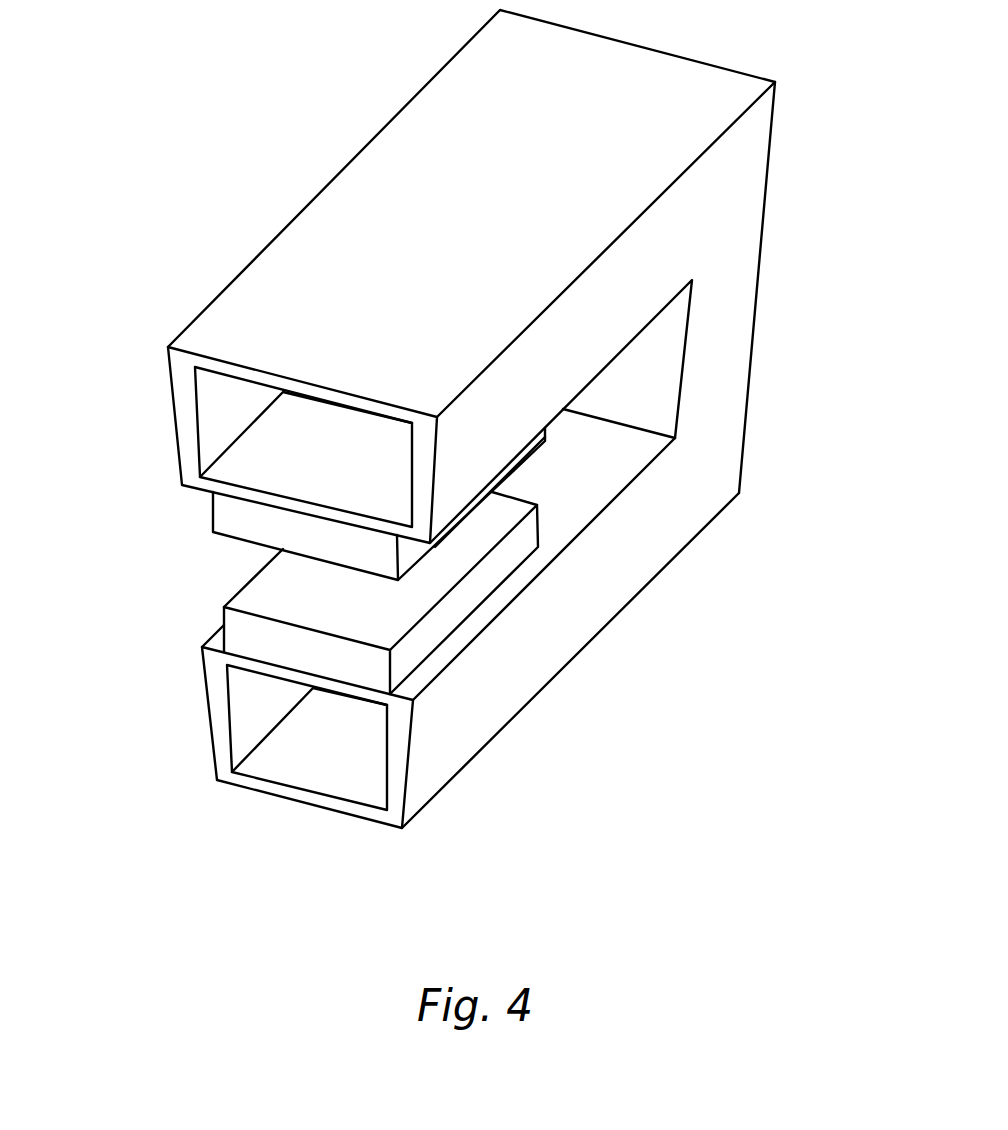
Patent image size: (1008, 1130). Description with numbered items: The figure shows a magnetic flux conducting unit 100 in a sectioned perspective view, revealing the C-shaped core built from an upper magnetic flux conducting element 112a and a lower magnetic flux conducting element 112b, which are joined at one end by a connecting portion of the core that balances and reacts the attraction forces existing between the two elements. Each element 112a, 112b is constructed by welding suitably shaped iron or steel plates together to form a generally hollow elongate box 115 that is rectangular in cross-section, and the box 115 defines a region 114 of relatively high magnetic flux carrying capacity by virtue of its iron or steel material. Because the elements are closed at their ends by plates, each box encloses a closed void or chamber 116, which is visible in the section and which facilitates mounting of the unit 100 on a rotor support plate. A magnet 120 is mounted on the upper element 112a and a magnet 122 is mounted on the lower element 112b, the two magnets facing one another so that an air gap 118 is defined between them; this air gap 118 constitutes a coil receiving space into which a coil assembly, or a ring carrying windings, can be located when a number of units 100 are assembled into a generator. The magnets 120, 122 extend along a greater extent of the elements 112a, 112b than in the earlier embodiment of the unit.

The magnetic flux conducting unit 100 is at (825, 232).
The upper magnetic flux conducting element 112a is at (347, 198).
The lower magnetic flux conducting element 112b is at (662, 522).
The region of high magnetic flux carrying capacity 114 is at (190, 409).
The hollow elongate box 115 is at (260, 305).
The closed void or chamber 116 is at (348, 466).
The air gap 118 is at (193, 563).
The magnet 120 is at (225, 511).
The magnet 122 is at (247, 635).